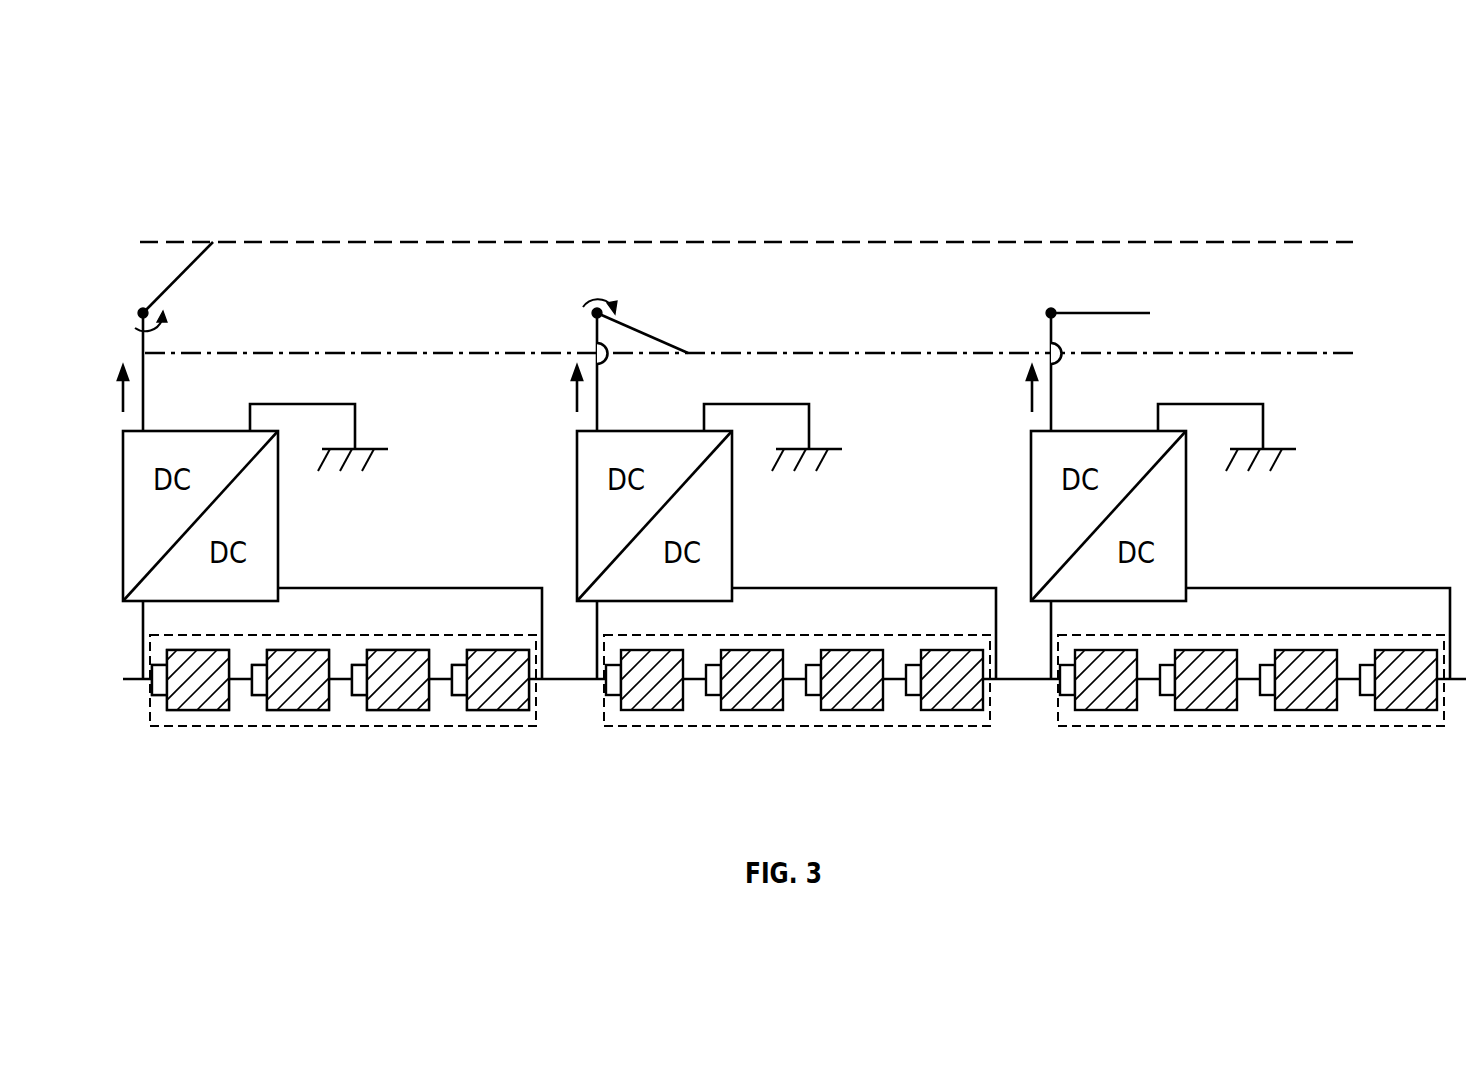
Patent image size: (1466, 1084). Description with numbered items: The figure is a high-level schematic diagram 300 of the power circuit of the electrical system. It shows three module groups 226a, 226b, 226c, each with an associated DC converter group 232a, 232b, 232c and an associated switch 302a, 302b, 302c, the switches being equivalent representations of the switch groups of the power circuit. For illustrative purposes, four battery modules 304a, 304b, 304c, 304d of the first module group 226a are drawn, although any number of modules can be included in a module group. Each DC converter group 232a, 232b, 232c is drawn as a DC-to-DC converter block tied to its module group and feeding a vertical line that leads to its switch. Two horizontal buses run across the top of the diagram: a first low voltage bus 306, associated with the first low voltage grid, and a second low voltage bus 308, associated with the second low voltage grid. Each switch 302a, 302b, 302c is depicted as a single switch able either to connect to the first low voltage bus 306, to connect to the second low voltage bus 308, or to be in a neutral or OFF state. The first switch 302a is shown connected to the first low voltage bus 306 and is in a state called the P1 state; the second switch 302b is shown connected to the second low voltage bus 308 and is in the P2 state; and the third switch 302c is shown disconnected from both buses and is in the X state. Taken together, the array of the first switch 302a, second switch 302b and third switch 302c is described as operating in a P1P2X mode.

The high-level schematic diagram 300 is at (782, 455).
The first switch 302a is at (141, 308).
The second switch 302b is at (595, 308).
The third switch 302c is at (1049, 307).
The battery module 304a is at (226, 692).
The battery module 304b is at (326, 692).
The battery module 304c is at (426, 692).
The battery module 304d is at (526, 692).
The first low voltage bus 306 is at (272, 240).
The second low voltage bus 308 is at (507, 350).
The first module group 226a is at (347, 715).
The second module group 226b is at (640, 727).
The third module group 226c is at (1094, 727).
The DC converter group 232a is at (280, 517).
The DC converter group 232b is at (734, 517).
The DC converter group 232c is at (1188, 517).